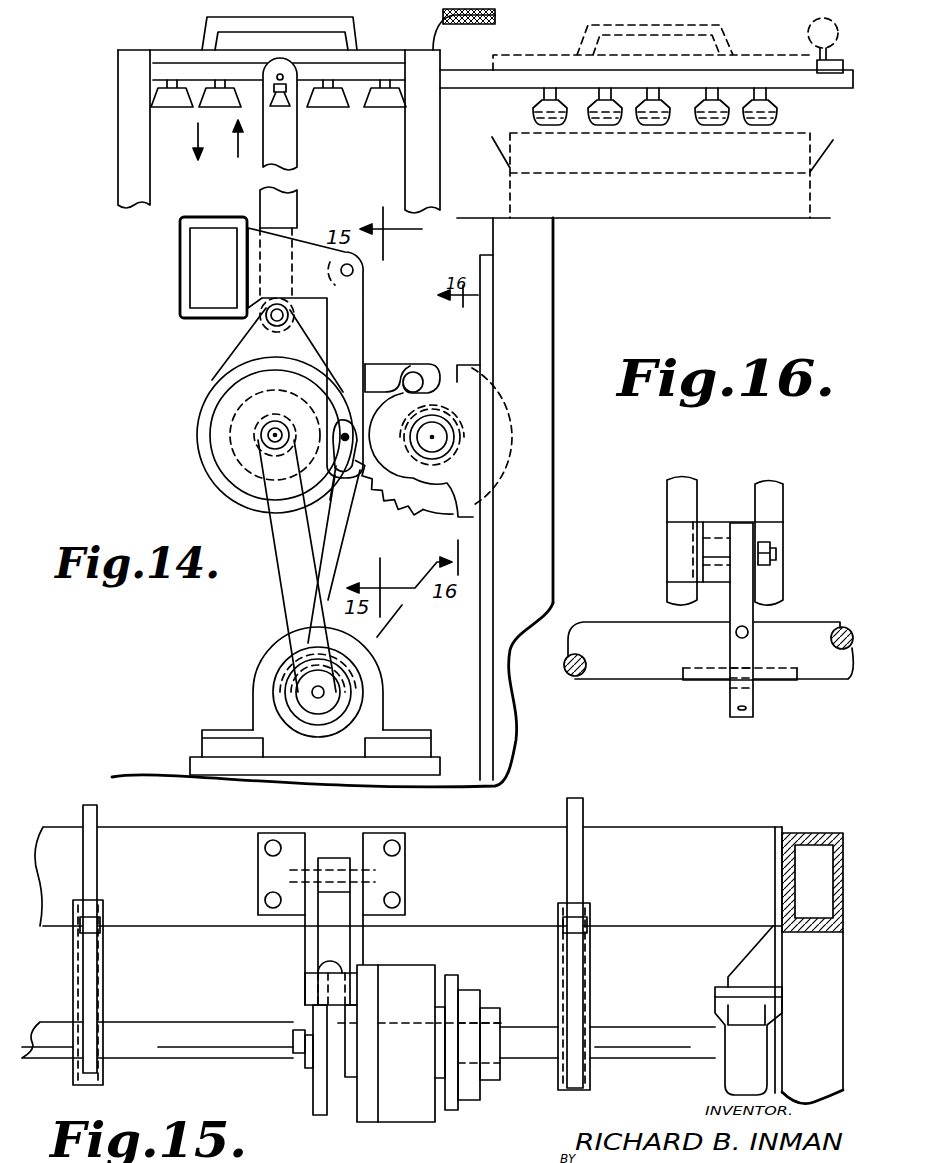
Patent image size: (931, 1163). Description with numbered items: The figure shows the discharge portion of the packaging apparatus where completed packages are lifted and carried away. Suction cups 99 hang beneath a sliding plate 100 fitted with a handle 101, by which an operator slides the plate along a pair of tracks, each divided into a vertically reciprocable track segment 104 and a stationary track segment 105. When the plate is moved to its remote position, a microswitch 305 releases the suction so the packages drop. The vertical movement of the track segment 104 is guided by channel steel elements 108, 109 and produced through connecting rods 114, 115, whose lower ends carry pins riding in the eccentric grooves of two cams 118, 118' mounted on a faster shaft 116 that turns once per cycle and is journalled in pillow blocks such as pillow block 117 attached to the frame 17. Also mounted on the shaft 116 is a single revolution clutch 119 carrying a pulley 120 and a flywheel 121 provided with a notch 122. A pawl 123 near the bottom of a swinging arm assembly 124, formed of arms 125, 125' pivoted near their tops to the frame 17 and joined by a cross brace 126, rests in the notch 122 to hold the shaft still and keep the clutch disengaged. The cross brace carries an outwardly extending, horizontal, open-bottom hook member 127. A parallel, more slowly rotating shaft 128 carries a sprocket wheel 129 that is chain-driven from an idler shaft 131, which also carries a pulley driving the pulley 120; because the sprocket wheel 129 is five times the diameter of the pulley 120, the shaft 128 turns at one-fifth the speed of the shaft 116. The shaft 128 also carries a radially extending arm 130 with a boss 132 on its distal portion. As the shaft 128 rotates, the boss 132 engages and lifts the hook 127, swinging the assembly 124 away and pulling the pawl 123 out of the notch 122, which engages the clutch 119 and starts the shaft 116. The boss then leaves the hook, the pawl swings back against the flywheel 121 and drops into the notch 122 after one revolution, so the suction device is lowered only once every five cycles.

In FIG. 14, the frame 17 is at (183, 292).
In FIG. 15, the frame 17 is at (715, 843).
In FIG. 14, the suction cups 99 is at (387, 112).
In FIG. 14, the sliding plate 100 is at (188, 35).
In FIG. 14, the handle 101 is at (357, 35).
In FIG. 14, the track segment 104 is at (367, 88).
In FIG. 14, the track segment 105 is at (518, 80).
In FIG. 14, the channel steel element 108 is at (118, 156).
In FIG. 14, the channel steel element 109 is at (422, 187).
In FIG. 15, the connecting rod 114 is at (580, 812).
In FIG. 14, the connecting rod 115 is at (290, 168).
In FIG. 15, the connecting rod 115 is at (95, 818).
In FIG. 14, the faster shaft 116 is at (275, 435).
In FIG. 15, the faster shaft 116 is at (170, 1030).
In FIG. 15, the pillow block 117 is at (742, 1085).
In FIG. 15, the bracket 118 is at (120, 992).
In FIG. 15, the bracket 118' is at (602, 996).
In FIG. 15, the single revolution clutch 119 is at (423, 975).
In FIG. 15, the pulley 120 is at (473, 995).
In FIG. 15, the flywheel 121 is at (325, 1108).
In FIG. 14, the notch 122 is at (302, 525).
In FIG. 15, the notch 122 is at (320, 1048).
In FIG. 14, the pawl 123 is at (411, 371).
In FIG. 15, the pawl 123 is at (320, 1042).
In FIG. 14, the swinging arm assembly 124 is at (367, 312).
In FIG. 15, the arm 125 is at (301, 919).
In FIG. 15, the arm 125' is at (395, 896).
In FIG. 15, the cross brace 126 is at (327, 967).
In FIG. 14, the hook member 127 is at (352, 428).
In FIG. 14, the slower shaft 128 is at (440, 447).
In FIG. 16, the slower shaft 128 is at (618, 677).
In FIG. 14, the sprocket wheel 129 is at (400, 516).
In FIG. 14, the radially extending arm 130 is at (427, 403).
In FIG. 16, the radially extending arm 130 is at (748, 617).
In FIG. 14, the idler shaft 131 is at (318, 692).
In FIG. 14, the boss 132 is at (460, 350).
In FIG. 16, the boss 132 is at (725, 541).
In FIG. 14, the microswitch 305 is at (836, 45).